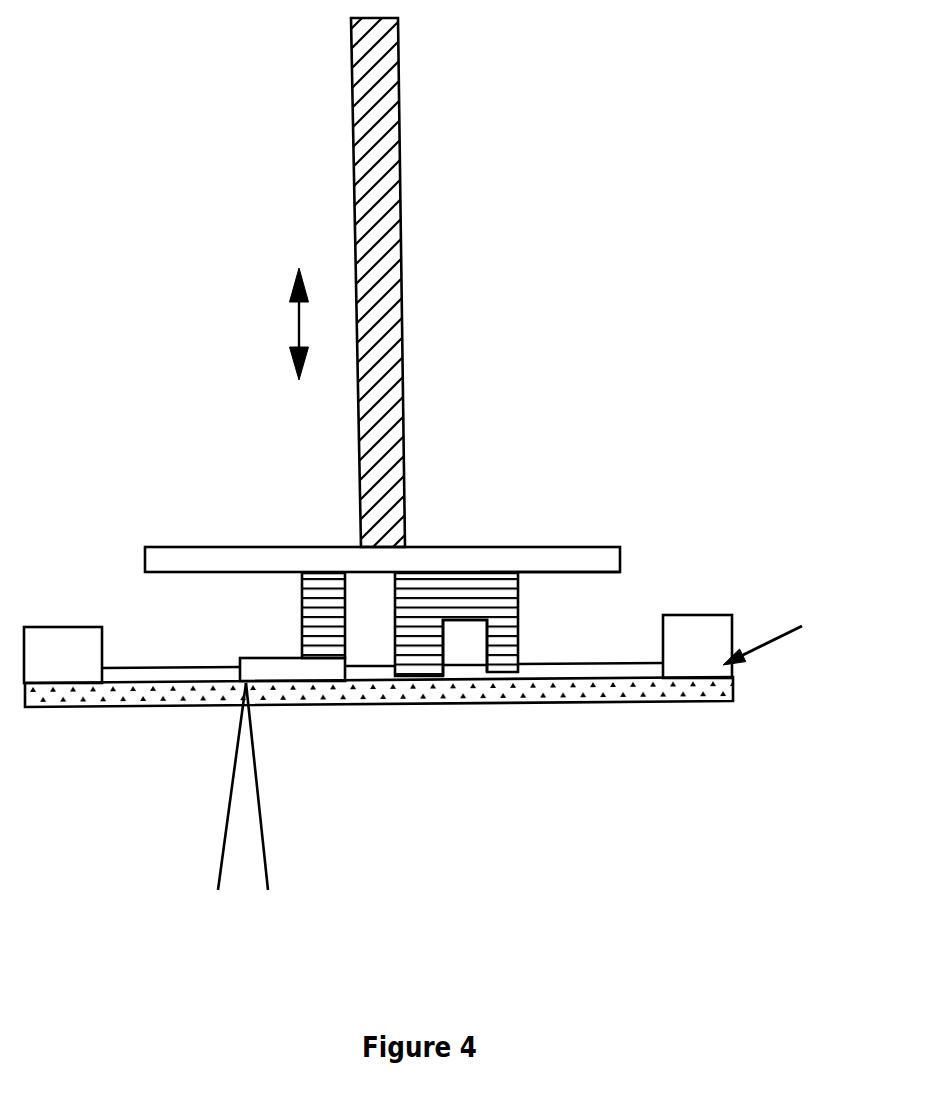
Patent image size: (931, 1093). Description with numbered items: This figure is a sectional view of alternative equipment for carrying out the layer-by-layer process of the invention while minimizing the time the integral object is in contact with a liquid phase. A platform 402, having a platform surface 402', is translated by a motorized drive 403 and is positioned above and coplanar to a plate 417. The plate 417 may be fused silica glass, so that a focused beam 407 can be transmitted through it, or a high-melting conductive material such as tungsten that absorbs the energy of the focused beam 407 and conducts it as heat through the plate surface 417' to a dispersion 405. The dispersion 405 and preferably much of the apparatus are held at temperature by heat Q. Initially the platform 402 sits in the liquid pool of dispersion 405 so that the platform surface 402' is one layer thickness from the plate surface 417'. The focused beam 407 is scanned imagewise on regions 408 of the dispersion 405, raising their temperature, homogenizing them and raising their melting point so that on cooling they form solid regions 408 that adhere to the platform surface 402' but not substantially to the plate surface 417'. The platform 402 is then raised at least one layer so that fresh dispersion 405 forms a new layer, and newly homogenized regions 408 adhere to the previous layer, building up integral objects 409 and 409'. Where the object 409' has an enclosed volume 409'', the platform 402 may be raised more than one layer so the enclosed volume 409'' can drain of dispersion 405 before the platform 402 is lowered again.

The motorized drive 403 is at (405, 388).
The platform 402 is at (382, 505).
The platform surface 402' is at (550, 599).
The dispersion 405 is at (620, 663).
The plate surface 417' is at (343, 615).
The plate 417 is at (379, 723).
The focused beam 407 is at (227, 810).
The regions 408 is at (282, 677).
The integral object 409 is at (382, 672).
The integral object 409' is at (520, 668).
The enclosed volume 409'' is at (512, 747).
The heat Q is at (778, 635).